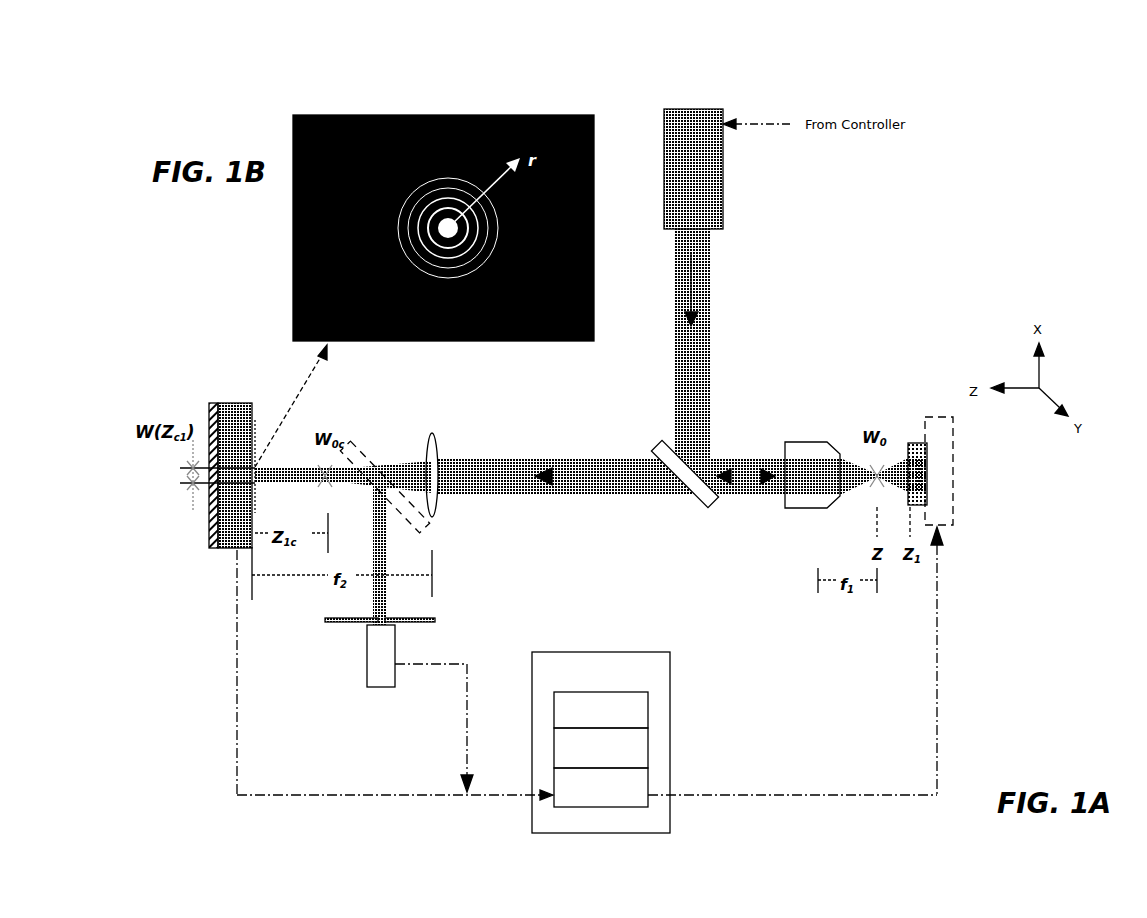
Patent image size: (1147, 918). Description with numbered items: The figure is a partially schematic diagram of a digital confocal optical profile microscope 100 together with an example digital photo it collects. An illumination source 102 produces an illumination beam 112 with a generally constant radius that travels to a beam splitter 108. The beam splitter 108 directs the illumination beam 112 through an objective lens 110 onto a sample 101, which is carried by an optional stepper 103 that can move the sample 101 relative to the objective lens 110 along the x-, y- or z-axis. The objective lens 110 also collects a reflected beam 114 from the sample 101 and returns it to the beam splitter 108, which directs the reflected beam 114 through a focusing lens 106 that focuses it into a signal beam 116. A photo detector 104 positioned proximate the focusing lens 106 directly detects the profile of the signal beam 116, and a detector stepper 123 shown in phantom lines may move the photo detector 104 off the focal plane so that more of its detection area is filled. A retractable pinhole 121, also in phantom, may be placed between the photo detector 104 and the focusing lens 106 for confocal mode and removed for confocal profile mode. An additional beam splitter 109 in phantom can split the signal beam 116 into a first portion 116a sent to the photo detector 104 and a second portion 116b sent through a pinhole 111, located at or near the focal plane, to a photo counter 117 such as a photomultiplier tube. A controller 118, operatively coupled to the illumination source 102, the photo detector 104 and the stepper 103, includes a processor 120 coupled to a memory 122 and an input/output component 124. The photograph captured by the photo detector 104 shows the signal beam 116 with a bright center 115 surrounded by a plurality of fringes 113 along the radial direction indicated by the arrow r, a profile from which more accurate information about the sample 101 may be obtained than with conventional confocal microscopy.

In FIG. 1A, the digital confocal optical profile microscope 100 is at (1040, 115).
In FIG. 1A, the sample 101 is at (908, 450).
In FIG. 1A, the illumination source 102 is at (664, 110).
In FIG. 1A, the stepper 103 is at (955, 502).
In FIG. 1A, the photo detector 104 is at (218, 403).
In FIG. 1A, the focusing lens 106 is at (428, 440).
In FIG. 1A, the beam splitter 108 is at (700, 502).
In FIG. 1A, the additional beam splitter 109 is at (447, 572).
In FIG. 1A, the objective lens 110 is at (810, 508).
In FIG. 1A, the pinhole 111 is at (342, 624).
In FIG. 1A, the illumination beam 112 is at (710, 350).
In FIG. 1B, the fringes 113 is at (420, 168).
In FIG. 1A, the reflected beam 114 is at (577, 490).
In FIG. 1B, the bright center 115 is at (430, 222).
In FIG. 1A, the signal beam 116 is at (413, 472).
In FIG. 1B, the signal beam 116 is at (503, 343).
In FIG. 1A, the first portion of the signal beam 116a is at (273, 484).
In FIG. 1A, the second portion of the signal beam 116b is at (403, 595).
In FIG. 1A, the photo counter 117 is at (367, 648).
In FIG. 1A, the controller 118 is at (670, 665).
In FIG. 1A, the processor 120 is at (648, 710).
In FIG. 1A, the retractable pinhole 121 is at (262, 414).
In FIG. 1A, the memory 122 is at (648, 748).
In FIG. 1A, the detector stepper 123 is at (210, 540).
In FIG. 1A, the input/output component 124 is at (648, 786).